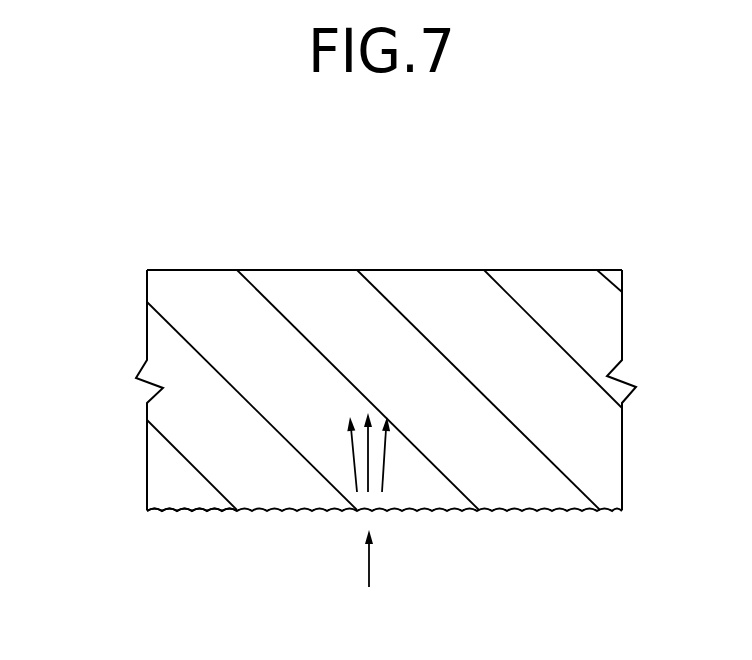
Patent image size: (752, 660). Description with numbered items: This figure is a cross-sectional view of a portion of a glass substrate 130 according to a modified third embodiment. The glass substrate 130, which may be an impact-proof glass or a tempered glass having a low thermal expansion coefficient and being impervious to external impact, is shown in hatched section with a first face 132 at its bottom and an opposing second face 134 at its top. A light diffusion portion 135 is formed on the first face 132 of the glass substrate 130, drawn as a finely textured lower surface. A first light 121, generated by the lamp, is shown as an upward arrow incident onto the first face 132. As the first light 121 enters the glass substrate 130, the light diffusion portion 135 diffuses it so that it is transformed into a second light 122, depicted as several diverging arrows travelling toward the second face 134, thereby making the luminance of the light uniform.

The first light 121 is at (371, 573).
The second light 122 is at (385, 445).
The glass substrate 130 is at (170, 350).
The first face 132 is at (193, 509).
The second face 134 is at (179, 270).
The light diffusion portion 135 is at (183, 512).